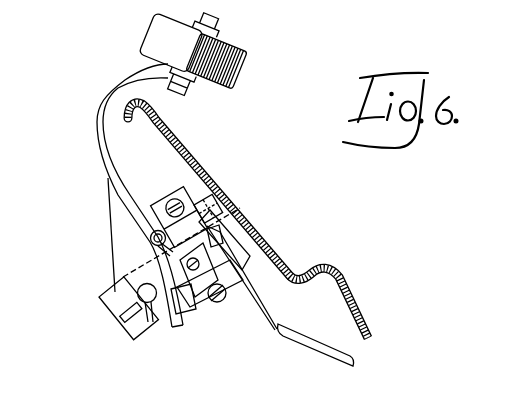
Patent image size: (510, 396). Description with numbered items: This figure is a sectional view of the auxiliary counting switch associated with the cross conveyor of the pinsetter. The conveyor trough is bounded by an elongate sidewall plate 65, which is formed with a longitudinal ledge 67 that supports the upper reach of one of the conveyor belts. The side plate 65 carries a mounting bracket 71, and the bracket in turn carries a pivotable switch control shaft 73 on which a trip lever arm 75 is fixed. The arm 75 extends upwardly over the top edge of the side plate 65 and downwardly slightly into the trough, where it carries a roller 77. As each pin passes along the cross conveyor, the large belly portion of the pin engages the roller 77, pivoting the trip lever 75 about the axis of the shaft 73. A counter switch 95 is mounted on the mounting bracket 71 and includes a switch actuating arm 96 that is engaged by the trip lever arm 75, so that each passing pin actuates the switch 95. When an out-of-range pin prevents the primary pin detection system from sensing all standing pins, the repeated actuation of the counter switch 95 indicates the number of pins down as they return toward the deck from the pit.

The sidewall plate 65 is at (188, 147).
The longitudinal ledge 67 is at (314, 272).
The mounting bracket 71 is at (112, 300).
The pivotable switch control shaft 73 is at (140, 291).
The trip lever arm 75 is at (99, 110).
The roller 77 is at (250, 80).
The counter switch 95 is at (214, 213).
The switch actuating arm 96 is at (155, 253).